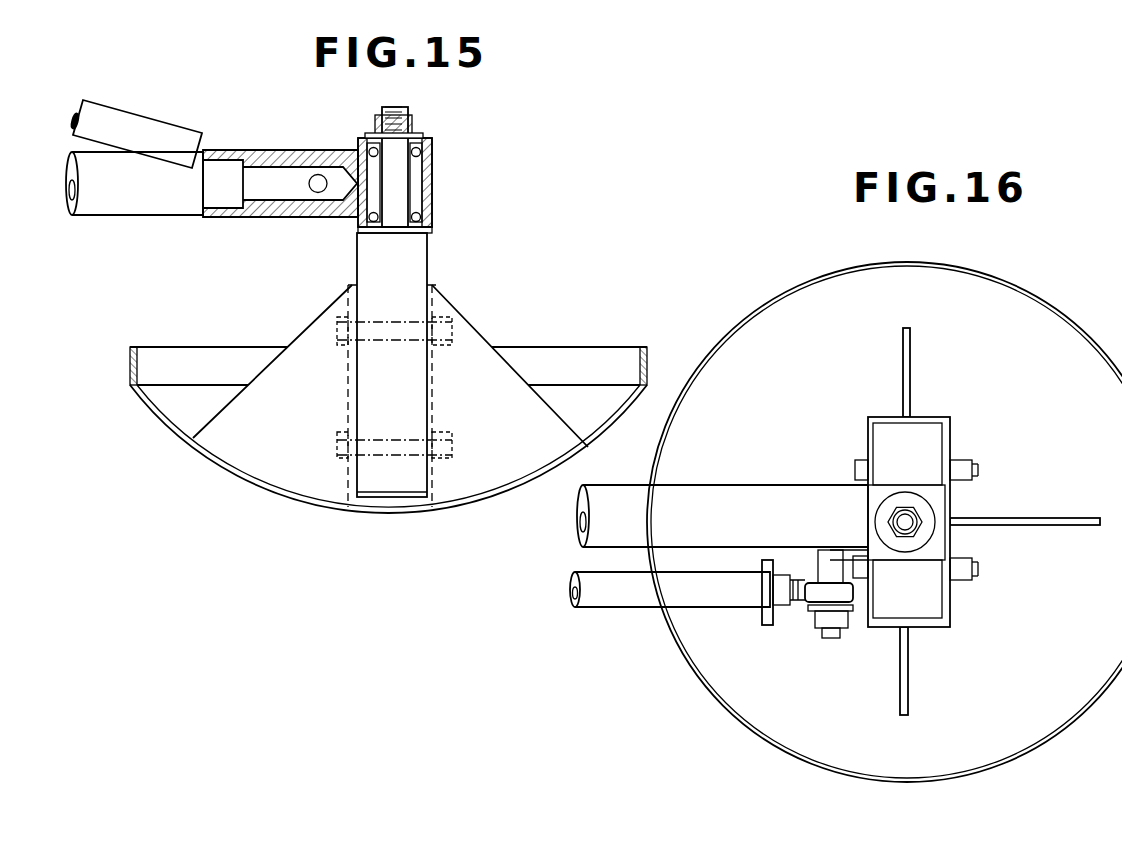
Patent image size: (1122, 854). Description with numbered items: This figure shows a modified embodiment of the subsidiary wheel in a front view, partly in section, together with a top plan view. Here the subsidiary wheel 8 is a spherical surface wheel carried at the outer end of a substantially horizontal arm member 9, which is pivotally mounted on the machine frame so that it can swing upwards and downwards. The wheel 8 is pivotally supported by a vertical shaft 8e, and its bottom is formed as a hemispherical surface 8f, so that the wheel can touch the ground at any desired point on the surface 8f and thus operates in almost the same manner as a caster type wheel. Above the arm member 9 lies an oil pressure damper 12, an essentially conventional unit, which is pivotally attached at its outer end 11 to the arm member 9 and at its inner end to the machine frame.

In FIG. 15, the subsidiary wheel 8 is at (482, 503).
In FIG. 16, the subsidiary wheel 8 is at (850, 743).
In FIG. 15, the vertical shaft 8e is at (408, 267).
In FIG. 16, the vertical shaft 8e is at (917, 520).
In FIG. 15, the hemispherical surface 8f is at (335, 505).
In FIG. 16, the hemispherical surface 8f is at (775, 295).
In FIG. 15, the arm member 9 is at (176, 208).
In FIG. 16, the arm member 9 is at (783, 498).
In FIG. 16, the outer end 11 is at (837, 630).
In FIG. 15, the oil pressure damper 12 is at (152, 118).
In FIG. 16, the oil pressure damper 12 is at (715, 597).